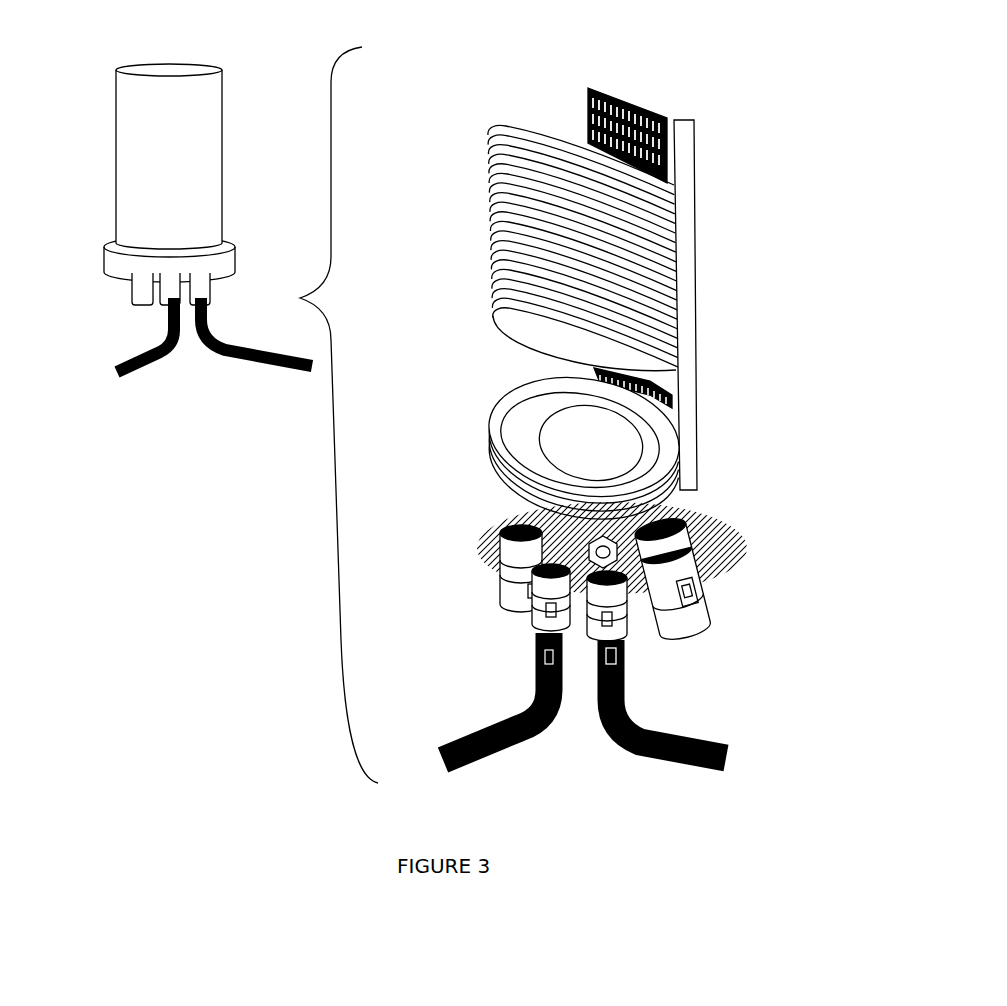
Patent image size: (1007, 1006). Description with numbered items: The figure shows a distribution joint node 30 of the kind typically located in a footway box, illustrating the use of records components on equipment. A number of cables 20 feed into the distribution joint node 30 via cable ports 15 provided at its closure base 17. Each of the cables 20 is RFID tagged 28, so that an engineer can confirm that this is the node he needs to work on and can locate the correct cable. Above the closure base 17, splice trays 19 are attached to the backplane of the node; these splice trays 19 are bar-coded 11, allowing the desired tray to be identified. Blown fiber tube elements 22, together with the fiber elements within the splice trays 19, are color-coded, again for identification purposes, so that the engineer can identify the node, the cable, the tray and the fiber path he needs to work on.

The bar code 11 is at (610, 98).
The cable ports 15 is at (133, 290).
The closure base 17 is at (115, 257).
The splice trays 19 is at (678, 328).
The cables 20 is at (162, 365).
The blown fiber tube elements 22 is at (512, 433).
The RFID tag 28 is at (625, 660).
The distribution joint node 30 is at (452, 388).